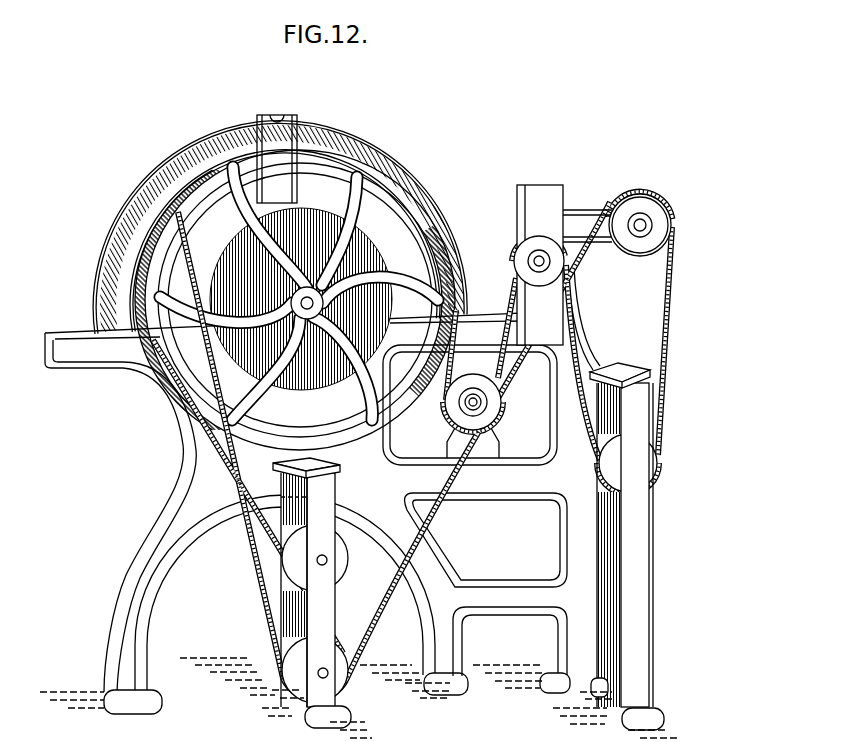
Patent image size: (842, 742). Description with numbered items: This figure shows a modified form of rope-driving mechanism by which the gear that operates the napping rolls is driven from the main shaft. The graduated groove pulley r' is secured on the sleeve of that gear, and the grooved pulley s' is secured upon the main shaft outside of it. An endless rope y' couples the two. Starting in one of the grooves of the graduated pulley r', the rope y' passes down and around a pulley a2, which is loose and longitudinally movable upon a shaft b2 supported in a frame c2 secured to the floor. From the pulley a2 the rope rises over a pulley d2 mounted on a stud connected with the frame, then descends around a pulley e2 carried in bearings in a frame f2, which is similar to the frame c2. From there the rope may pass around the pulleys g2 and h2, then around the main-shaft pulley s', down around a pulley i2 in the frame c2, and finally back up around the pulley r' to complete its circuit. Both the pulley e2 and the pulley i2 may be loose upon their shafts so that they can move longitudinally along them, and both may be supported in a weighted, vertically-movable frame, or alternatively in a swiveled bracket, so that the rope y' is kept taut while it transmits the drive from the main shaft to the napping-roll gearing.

The grooved pulley s' is at (298, 300).
The graduated groove pulley r' is at (299, 293).
The pulley g2 is at (528, 253).
The pulley d2 is at (648, 212).
The pulley h2 is at (488, 409).
The pulley e2 is at (654, 465).
The frame f2 is at (627, 546).
The endless rope y' is at (293, 469).
The pulley i2 is at (343, 564).
The frame c2 is at (308, 590).
The pulley a2 is at (330, 662).
The shaft b2 is at (332, 677).